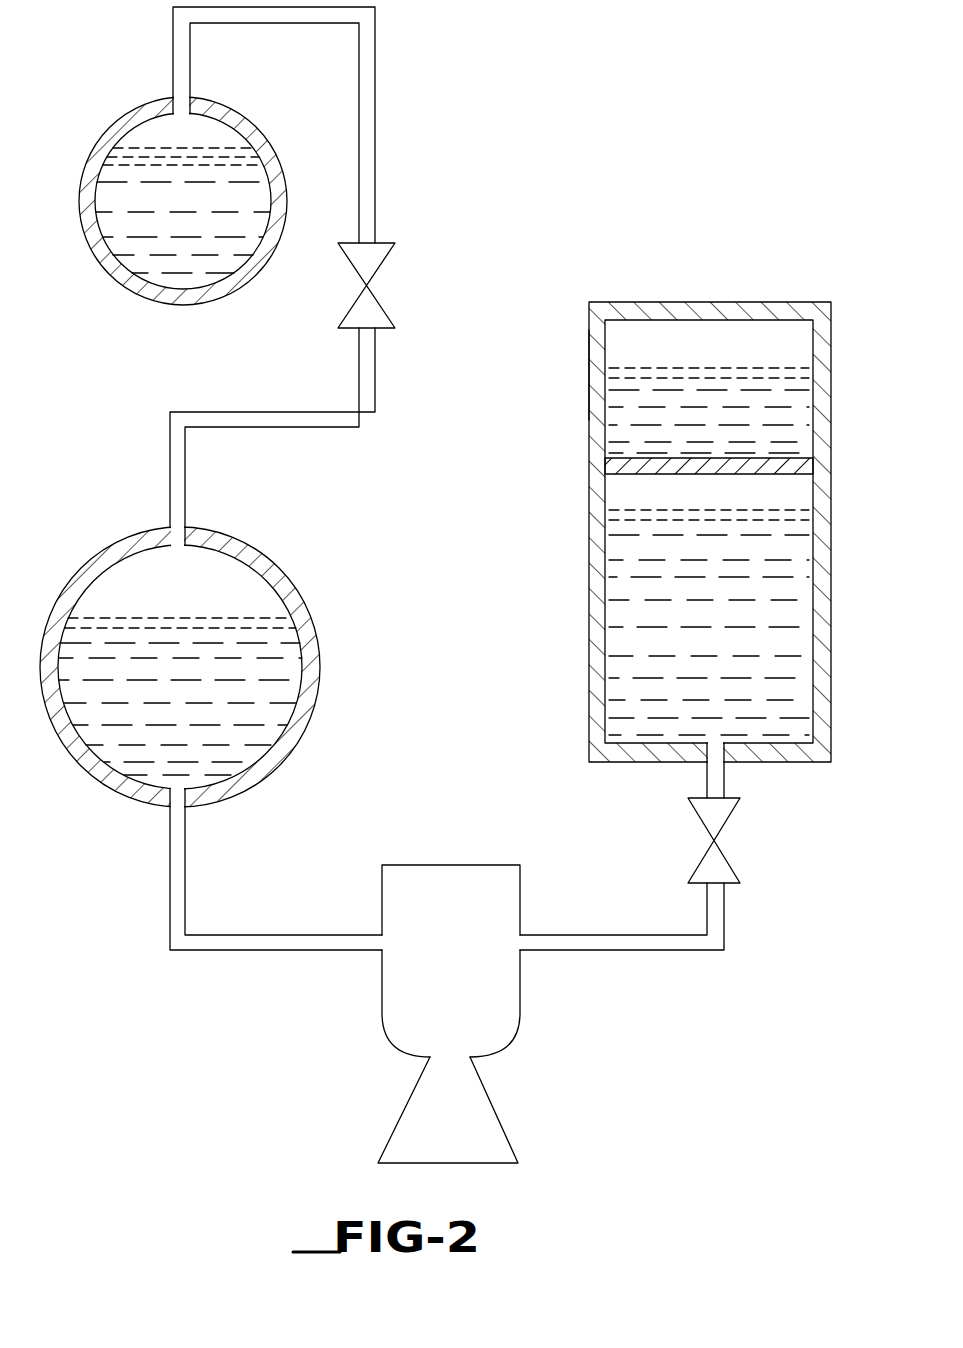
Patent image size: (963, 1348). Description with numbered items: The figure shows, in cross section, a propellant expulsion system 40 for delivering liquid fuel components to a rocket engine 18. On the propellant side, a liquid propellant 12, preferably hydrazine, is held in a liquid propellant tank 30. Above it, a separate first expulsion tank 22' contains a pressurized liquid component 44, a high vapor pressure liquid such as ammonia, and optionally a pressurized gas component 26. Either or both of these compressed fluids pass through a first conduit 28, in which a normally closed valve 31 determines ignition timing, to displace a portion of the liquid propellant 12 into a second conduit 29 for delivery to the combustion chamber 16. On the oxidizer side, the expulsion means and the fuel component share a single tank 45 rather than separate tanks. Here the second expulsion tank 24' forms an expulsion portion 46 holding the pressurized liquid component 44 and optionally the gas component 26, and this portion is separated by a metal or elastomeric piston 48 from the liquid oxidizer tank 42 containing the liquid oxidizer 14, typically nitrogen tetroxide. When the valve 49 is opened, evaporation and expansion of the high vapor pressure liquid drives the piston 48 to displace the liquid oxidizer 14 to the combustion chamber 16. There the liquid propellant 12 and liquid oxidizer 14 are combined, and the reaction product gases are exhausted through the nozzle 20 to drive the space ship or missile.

The propellant expulsion system 40 is at (604, 104).
The first expulsion tank 22' is at (212, 199).
The pressurized gas component 26 is at (203, 132).
The pressurized liquid component 44 is at (133, 225).
The first conduit 28 is at (375, 152).
The valve 31 is at (375, 315).
The liquid propellant tank 30 is at (300, 605).
The liquid propellant 12 is at (300, 675).
The second conduit 29 is at (258, 938).
The combustion chamber 16 is at (452, 880).
The rocket engine 18 is at (393, 983).
The nozzle 20 is at (396, 1152).
The single tank 45 is at (681, 522).
The second expulsion tank 24' is at (737, 534).
The expulsion portion 46 is at (568, 378).
The piston 48 is at (617, 476).
The liquid oxidizer tank 42 is at (589, 603).
The liquid oxidizer 14 is at (637, 667).
The valve 49 is at (724, 870).